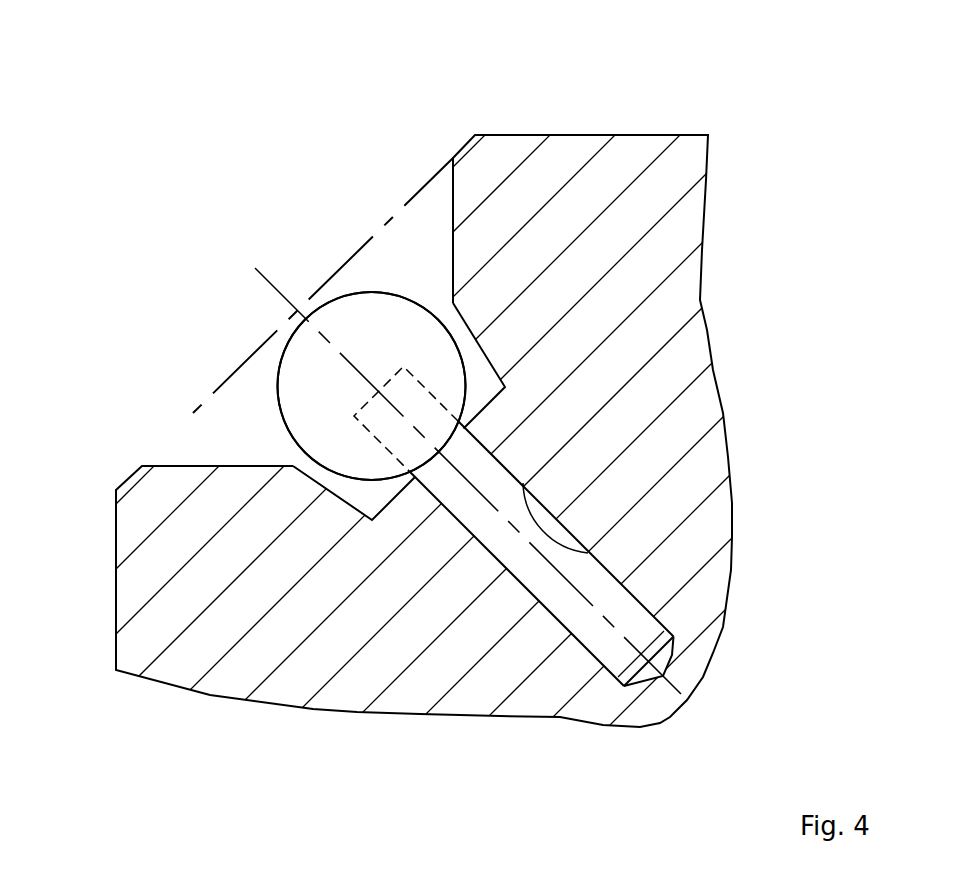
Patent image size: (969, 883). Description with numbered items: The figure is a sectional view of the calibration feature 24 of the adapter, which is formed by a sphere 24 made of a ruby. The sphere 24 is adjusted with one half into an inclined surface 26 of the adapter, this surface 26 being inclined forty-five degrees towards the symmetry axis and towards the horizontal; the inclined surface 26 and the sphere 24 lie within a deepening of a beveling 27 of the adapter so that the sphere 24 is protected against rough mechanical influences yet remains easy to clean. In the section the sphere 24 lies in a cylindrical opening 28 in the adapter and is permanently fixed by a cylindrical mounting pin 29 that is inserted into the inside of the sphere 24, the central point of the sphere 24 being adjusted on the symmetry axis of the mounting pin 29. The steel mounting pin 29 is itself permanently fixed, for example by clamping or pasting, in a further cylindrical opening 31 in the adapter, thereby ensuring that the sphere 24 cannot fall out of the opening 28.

The calibration feature 24 is at (350, 327).
The surface 26 is at (444, 303).
The beveling 27 is at (193, 413).
The cylindrical opening 28 is at (488, 365).
The mounting pin 29 is at (597, 592).
The cylindrical opening 31 is at (562, 525).